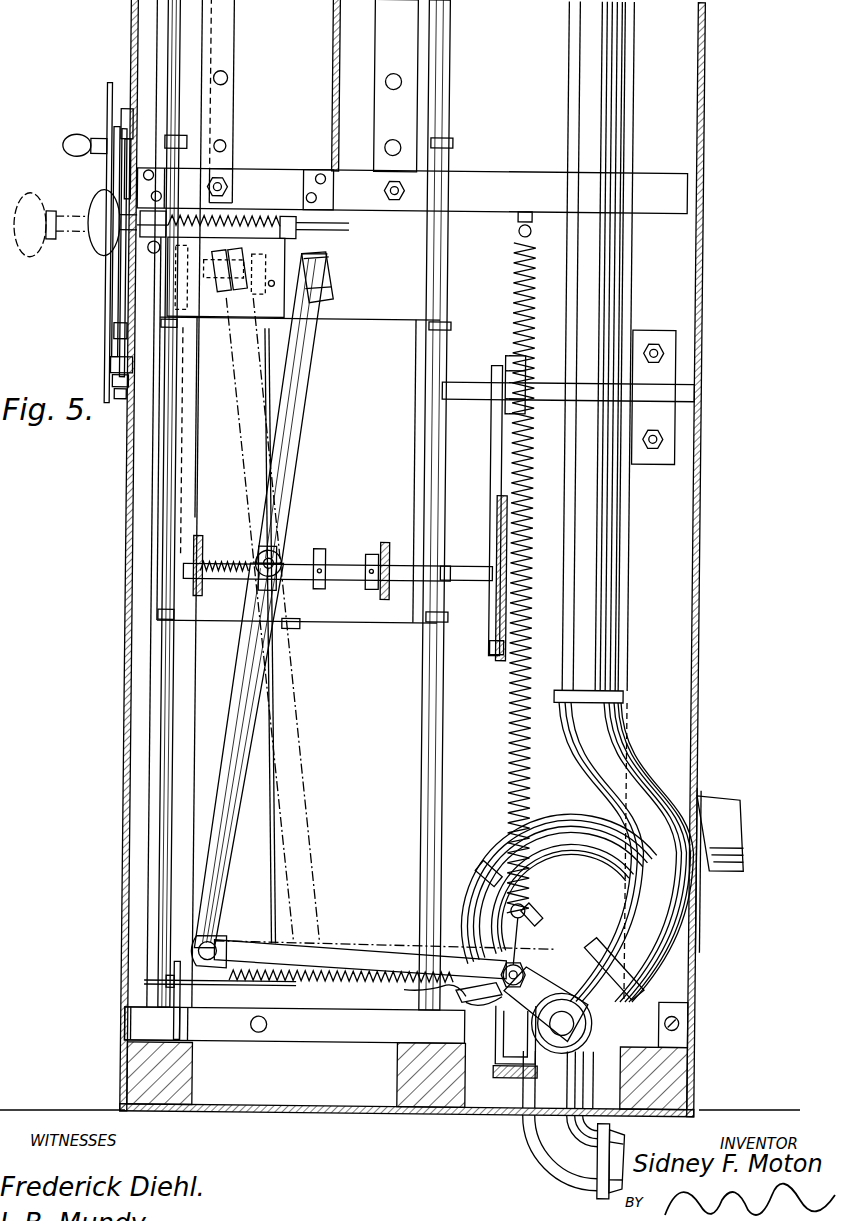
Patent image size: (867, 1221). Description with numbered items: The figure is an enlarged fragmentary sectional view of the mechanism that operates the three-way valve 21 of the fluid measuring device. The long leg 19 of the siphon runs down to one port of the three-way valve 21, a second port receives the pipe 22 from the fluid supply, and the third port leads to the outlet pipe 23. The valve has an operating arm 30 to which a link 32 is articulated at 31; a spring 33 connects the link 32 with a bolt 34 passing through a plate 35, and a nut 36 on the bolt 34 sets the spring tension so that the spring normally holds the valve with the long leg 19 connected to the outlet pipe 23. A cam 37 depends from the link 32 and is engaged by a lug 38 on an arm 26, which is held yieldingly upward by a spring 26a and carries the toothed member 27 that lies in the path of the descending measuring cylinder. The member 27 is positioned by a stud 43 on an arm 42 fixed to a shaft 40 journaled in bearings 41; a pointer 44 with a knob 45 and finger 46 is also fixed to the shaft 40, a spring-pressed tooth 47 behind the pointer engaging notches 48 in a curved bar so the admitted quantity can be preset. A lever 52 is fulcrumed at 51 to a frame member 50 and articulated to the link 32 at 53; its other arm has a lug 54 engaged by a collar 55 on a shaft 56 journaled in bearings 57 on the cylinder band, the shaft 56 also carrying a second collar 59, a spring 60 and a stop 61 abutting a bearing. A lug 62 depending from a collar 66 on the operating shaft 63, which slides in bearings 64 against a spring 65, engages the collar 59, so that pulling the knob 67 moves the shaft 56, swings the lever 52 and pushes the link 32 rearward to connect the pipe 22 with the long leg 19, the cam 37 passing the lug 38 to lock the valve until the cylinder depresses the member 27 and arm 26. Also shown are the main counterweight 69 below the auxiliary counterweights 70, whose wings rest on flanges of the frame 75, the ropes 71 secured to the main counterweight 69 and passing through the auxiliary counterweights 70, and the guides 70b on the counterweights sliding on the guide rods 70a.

The long leg of the siphon 19 is at (626, 501).
The three-way valve 21 is at (592, 1027).
The pipe 22 is at (730, 808).
The outlet pipe 23 is at (556, 1132).
The arm 26 is at (522, 1078).
The spring 26a is at (510, 742).
The member 27 is at (496, 540).
The operating arm 30 is at (540, 985).
The articulation 31 is at (476, 995).
The link 32 is at (352, 950).
The spring 33 is at (316, 983).
The bolt 34 is at (222, 995).
The plate 35 is at (130, 982).
The nut 36 is at (172, 1000).
The cam 37 is at (410, 991).
The lug 38 is at (500, 1040).
The shaft 40 is at (543, 395).
The bearings 41 is at (660, 392).
The arm 42 is at (489, 458).
The stud 43 is at (466, 577).
The pointer 44 is at (111, 334).
The knob 45 is at (58, 152).
The finger 46 is at (102, 97).
The spring-pressed tooth 47 is at (109, 287).
The notches 48 is at (124, 130).
The frame member 50 is at (273, 621).
The fulcrum 51 is at (267, 552).
The lever 52 is at (238, 756).
The articulation 53 is at (202, 950).
The lug 54 is at (318, 300).
The collar 55 is at (318, 552).
The shaft 56 is at (338, 568).
The bearings 57 is at (193, 594).
The second collar 59 is at (276, 590).
The spring 60 is at (214, 582).
The stop 61 is at (372, 556).
The lug 62 is at (283, 312).
The operating shaft 63 is at (178, 218).
The bearings 64 is at (300, 226).
The spring 65 is at (226, 277).
The collar 66 is at (306, 196).
The knob 67 is at (113, 222).
The main counterweight 69 is at (299, 430).
The auxiliary counterweights 70 is at (412, 177).
The guide rods 70a is at (162, 738).
The guides 70b is at (180, 142).
The ropes 71 is at (326, 38).
The frame 75 is at (309, 102).